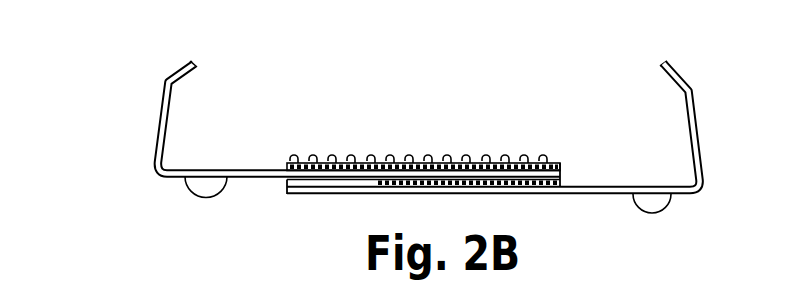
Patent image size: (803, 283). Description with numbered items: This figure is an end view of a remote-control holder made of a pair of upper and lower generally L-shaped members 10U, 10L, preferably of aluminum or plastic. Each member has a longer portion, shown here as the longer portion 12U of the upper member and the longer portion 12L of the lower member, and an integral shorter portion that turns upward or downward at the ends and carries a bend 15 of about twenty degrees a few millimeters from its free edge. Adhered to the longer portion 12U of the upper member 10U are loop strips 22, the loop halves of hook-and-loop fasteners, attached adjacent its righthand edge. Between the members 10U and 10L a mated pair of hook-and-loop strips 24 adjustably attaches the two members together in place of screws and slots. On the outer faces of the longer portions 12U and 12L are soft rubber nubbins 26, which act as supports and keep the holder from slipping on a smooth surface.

The upper generally L-shaped member 10U is at (154, 170).
The lower generally L-shaped member 10L is at (704, 147).
The longer portion of upper member 12U is at (243, 170).
The longer portion of lower member 12L is at (605, 188).
The bend 15 is at (163, 80).
The loop strips 22 is at (352, 161).
The mated hook-and-loop strips 24 is at (434, 178).
The nubbins 26 is at (186, 195).